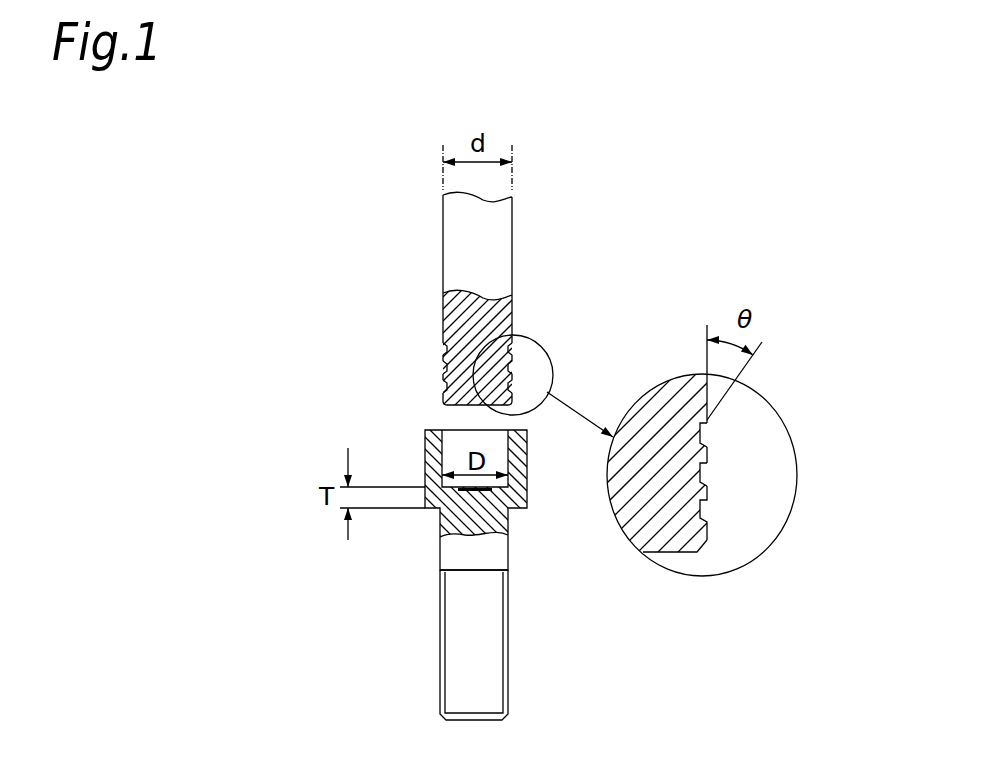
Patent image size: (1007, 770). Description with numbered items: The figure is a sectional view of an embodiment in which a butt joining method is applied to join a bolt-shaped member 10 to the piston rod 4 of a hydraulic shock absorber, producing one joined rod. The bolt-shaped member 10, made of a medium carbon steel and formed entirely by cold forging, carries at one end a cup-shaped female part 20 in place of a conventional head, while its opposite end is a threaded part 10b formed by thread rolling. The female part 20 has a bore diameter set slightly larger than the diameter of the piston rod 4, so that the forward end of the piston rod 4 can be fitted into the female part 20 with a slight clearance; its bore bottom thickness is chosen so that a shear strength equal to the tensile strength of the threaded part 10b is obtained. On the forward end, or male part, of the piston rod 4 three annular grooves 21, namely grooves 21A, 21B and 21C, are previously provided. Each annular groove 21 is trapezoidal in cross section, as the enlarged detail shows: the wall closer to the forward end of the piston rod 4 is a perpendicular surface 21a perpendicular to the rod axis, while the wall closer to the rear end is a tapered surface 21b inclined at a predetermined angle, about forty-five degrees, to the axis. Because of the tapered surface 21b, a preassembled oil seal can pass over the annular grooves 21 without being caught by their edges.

The piston rod 4 is at (443, 222).
The annular grooves 21 is at (330, 295).
The annular groove 21A is at (442, 383).
The annular groove 21B is at (442, 367).
The annular groove 21C is at (442, 350).
The perpendicular surface 21a is at (705, 478).
The tapered surface 21b is at (705, 425).
The female part 20 is at (527, 490).
The bolt-shaped member 10 is at (438, 648).
The threaded part 10b is at (508, 677).